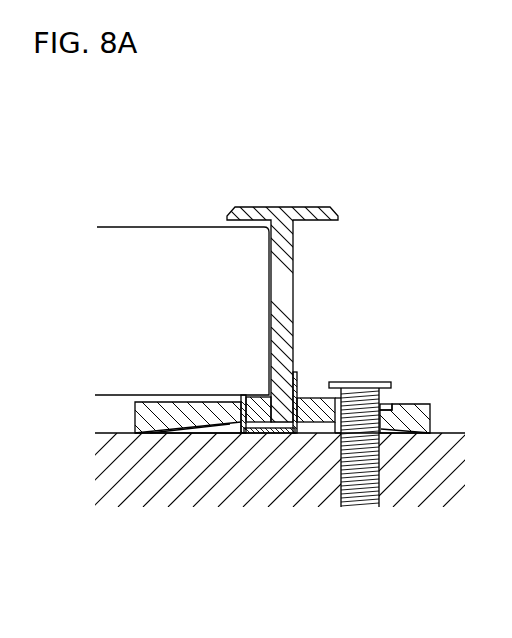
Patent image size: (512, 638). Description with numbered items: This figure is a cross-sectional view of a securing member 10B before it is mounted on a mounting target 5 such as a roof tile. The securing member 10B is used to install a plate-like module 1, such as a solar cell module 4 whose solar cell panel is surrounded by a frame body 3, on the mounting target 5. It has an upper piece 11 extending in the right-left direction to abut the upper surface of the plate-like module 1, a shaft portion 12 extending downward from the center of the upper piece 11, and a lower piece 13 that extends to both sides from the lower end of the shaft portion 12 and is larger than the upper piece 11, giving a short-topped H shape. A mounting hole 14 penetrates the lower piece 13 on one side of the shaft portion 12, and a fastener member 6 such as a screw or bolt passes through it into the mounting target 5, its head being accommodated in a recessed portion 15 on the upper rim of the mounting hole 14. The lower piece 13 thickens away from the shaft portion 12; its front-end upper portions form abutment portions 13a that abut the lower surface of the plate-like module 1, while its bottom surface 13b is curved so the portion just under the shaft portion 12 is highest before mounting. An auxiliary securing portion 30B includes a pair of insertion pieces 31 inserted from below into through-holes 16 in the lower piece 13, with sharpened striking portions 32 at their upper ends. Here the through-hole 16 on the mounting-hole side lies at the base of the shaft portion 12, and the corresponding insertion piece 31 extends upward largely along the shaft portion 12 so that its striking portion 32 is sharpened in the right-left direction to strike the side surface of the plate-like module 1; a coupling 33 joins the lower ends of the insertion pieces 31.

The plate-like module 1 is at (167, 227).
The solar cell module 4 is at (182, 268).
The frame body 3 is at (122, 238).
The mounting target 5 is at (110, 433).
The fastener member 6 is at (375, 426).
The securing member 10B is at (226, 286).
The upper piece 11 is at (222, 286).
The shaft portion 12 is at (284, 259).
The lower piece 13 is at (180, 413).
The abutment portion 13a is at (282, 389).
The bottom surface 13b is at (190, 436).
The mounting hole 14 is at (370, 405).
The recessed portion 15 is at (390, 403).
The through-hole 16 is at (230, 432).
The auxiliary securing portion 30B is at (272, 421).
The insertion piece 31 is at (252, 416).
The striking portion 32 is at (244, 400).
The bottom plate of clamp 33 is at (287, 429).